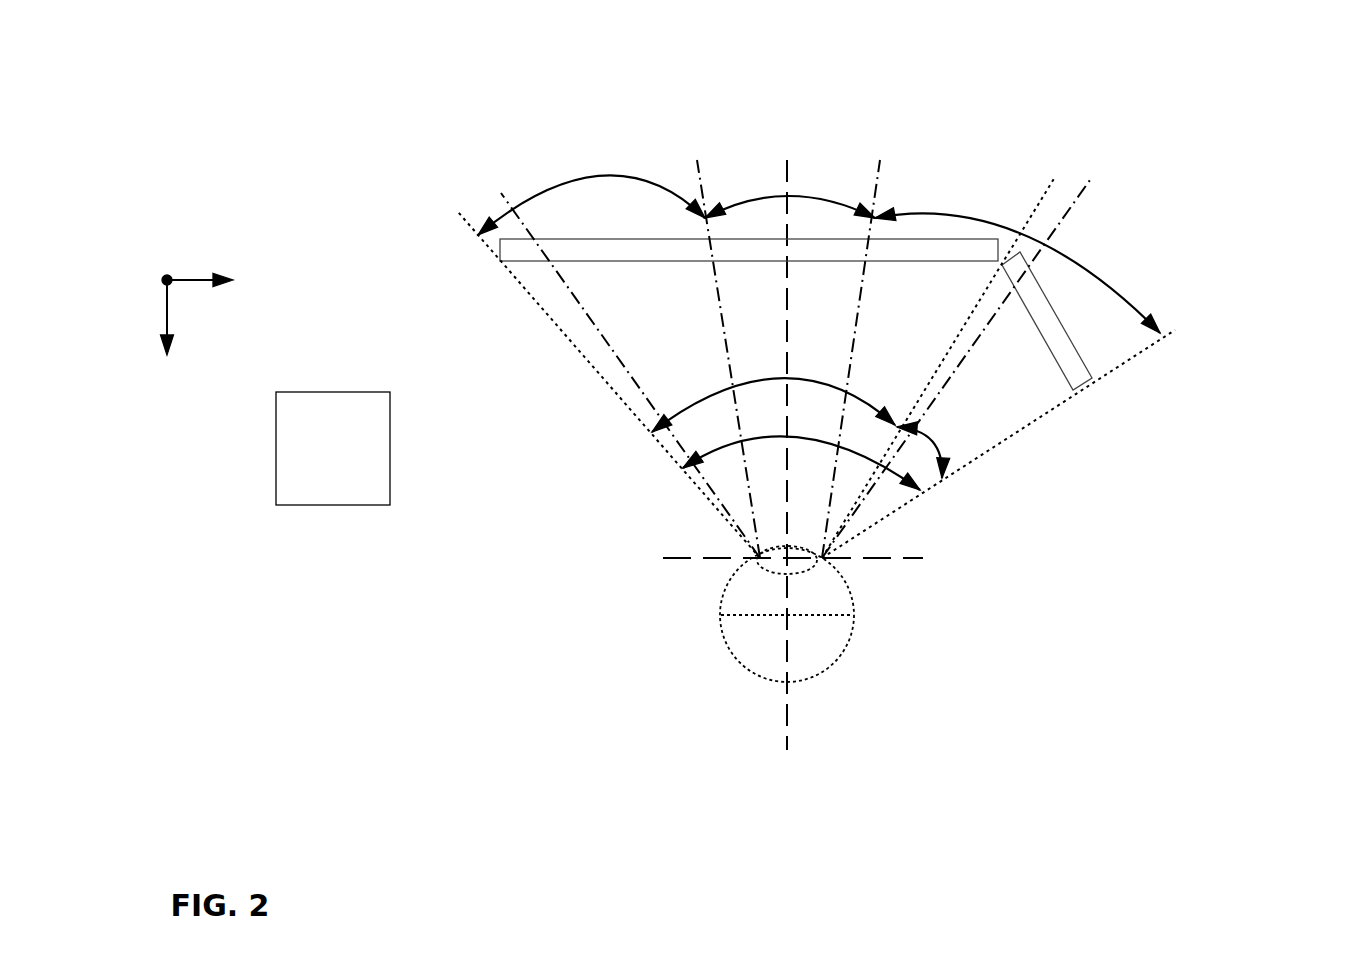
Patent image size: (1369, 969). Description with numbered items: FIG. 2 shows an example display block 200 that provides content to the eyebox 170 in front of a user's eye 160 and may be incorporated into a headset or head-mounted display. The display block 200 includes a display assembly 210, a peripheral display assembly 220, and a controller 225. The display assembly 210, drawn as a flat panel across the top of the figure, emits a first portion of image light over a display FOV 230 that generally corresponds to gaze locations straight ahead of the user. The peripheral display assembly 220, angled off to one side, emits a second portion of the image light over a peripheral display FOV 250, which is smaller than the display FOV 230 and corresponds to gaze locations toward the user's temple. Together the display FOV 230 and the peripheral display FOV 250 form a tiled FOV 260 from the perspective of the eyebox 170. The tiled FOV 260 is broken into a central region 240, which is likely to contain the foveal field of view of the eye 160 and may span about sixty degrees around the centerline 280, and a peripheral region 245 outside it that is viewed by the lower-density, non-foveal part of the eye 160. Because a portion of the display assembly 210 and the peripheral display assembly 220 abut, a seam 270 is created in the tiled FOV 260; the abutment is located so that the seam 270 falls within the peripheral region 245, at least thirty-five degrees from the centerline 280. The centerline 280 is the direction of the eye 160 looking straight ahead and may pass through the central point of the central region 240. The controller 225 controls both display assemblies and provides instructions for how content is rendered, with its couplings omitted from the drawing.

The display block 200 is at (257, 52).
The eye 160 is at (722, 630).
The eyebox 170 is at (678, 559).
The display assembly 210 is at (597, 250).
The peripheral display assembly 220 is at (1063, 352).
The controller 225 is at (333, 448).
The display FOV 230 is at (708, 392).
The central region 240 is at (757, 197).
The peripheral region 245 is at (943, 210).
The peripheral display FOV 250 is at (935, 442).
The tiled FOV 260 is at (905, 480).
The seam 270 is at (1060, 180).
The centerline 280 is at (787, 710).